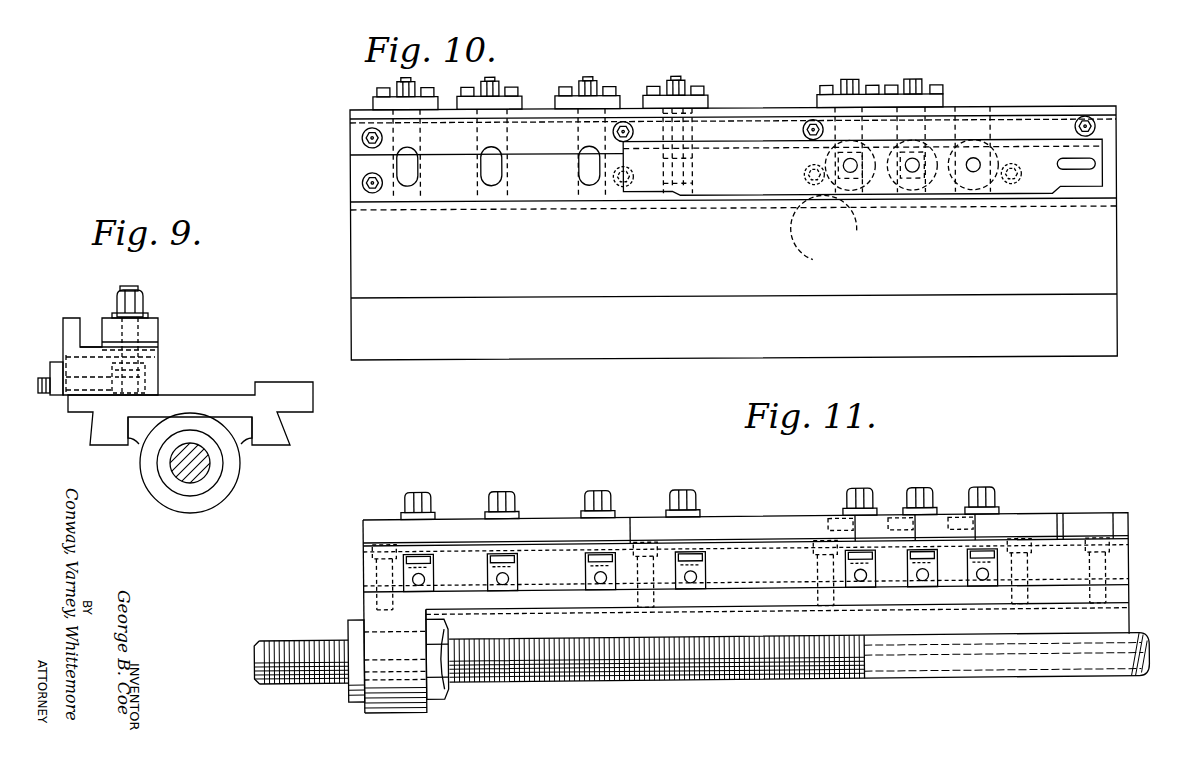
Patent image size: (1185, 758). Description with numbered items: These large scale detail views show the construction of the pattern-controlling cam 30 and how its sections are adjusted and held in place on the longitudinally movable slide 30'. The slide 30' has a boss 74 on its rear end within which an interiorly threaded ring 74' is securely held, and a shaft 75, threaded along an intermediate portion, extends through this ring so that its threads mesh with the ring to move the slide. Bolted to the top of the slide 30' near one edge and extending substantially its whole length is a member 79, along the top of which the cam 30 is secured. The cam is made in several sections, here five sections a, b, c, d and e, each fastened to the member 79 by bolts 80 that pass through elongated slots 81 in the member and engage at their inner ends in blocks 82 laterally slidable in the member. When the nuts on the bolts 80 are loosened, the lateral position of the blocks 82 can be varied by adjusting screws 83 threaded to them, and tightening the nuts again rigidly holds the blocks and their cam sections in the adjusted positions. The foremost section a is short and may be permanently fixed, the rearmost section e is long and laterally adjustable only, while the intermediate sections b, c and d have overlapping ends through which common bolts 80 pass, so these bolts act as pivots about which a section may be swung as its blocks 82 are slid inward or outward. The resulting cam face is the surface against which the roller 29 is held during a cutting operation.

In FIG. 10, the roller 29 is at (812, 270).
In FIG. 9, the pattern-controlling cam 30 is at (122, 356).
In FIG. 11, the pattern-controlling cam 30 is at (726, 613).
In FIG. 9, the longitudinally movable slide 30' is at (190, 402).
In FIG. 10, the longitudinally movable slide 30' is at (733, 244).
In FIG. 9, the boss 74 is at (190, 469).
In FIG. 11, the boss 74 is at (398, 673).
In FIG. 9, the interiorly threaded ring 74' is at (212, 466).
In FIG. 9, the shaft 75 is at (174, 479).
In FIG. 11, the shaft 75 is at (706, 678).
In FIG. 9, the member 79 is at (72, 362).
In FIG. 10, the member 79 is at (454, 197).
In FIG. 9, the bolts 80 is at (143, 303).
In FIG. 11, the bolts 80 is at (431, 500).
In FIG. 9, the elongated slots 81 is at (148, 350).
In FIG. 10, the elongated slots 81 is at (404, 187).
In FIG. 11, the elongated slots 81 is at (430, 556).
In FIG. 9, the blocks 82 is at (147, 371).
In FIG. 11, the blocks 82 is at (425, 582).
In FIG. 9, the adjusting screws 83 is at (44, 397).
In FIG. 10, the adjusting screws 83 is at (416, 89).
In FIG. 11, the adjusting screws 83 is at (706, 560).
In FIG. 10, the foremost cam section a is at (1028, 197).
In FIG. 11, the foremost cam section a is at (1024, 524).
In FIG. 10, the intermediate cam section b is at (945, 197).
In FIG. 11, the intermediate cam section b is at (946, 524).
In FIG. 10, the intermediate cam section c is at (888, 197).
In FIG. 11, the intermediate cam section c is at (876, 527).
In FIG. 10, the intermediate cam section d is at (736, 196).
In FIG. 11, the intermediate cam section d is at (754, 524).
In FIG. 10, the rearmost cam section e is at (540, 195).
In FIG. 11, the rearmost cam section e is at (561, 530).